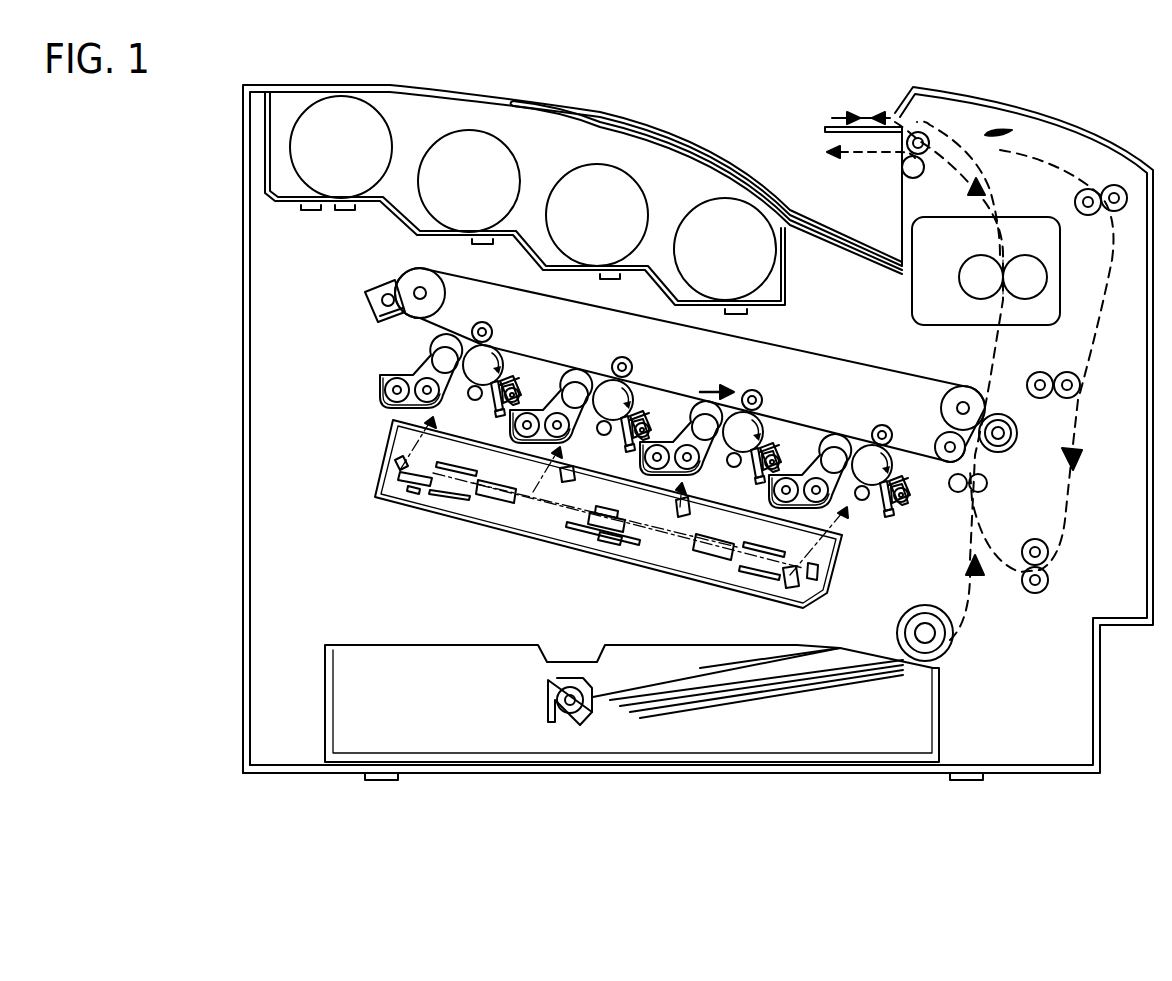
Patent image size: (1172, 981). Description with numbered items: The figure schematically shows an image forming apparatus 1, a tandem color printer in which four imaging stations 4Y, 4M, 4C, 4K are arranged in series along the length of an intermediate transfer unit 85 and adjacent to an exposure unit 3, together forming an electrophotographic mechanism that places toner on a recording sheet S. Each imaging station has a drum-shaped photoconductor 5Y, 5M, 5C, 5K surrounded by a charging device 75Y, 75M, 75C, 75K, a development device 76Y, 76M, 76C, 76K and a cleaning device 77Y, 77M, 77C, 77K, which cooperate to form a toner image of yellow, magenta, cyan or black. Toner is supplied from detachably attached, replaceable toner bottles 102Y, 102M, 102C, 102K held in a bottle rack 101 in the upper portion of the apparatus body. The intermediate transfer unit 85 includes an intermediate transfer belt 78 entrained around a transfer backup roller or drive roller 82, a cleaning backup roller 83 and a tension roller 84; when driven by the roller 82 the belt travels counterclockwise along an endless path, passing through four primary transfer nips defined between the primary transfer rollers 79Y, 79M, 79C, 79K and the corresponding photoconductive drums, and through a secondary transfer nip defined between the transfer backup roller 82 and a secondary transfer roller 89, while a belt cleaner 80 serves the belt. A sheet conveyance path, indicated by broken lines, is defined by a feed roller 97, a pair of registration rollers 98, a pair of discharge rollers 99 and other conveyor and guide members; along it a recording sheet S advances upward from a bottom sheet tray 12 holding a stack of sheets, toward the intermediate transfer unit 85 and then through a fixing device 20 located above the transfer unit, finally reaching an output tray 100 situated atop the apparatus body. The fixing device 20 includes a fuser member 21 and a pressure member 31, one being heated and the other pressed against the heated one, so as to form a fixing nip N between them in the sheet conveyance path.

The image forming apparatus 1 is at (655, 92).
The output tray 100 is at (726, 160).
The bottle rack 101 is at (400, 230).
The toner bottle 102Y is at (310, 108).
The toner bottle 102M is at (438, 146).
The toner bottle 102C is at (570, 180).
The toner bottle 102K is at (694, 220).
The discharge rollers 99 is at (905, 165).
The fixing device 20 is at (1012, 218).
The fuser member 21 is at (962, 270).
The pressure member 31 is at (1048, 272).
The fixing nip N is at (1006, 264).
The registration rollers 98 is at (978, 492).
The intermediate transfer unit 85 is at (650, 365).
The intermediate transfer belt 78 is at (790, 340).
The cleaning backup roller 83 is at (442, 296).
The tension roller 84 is at (945, 412).
The transfer backup roller 82 is at (962, 388).
The belt cleaner 80 is at (368, 312).
The secondary transfer roller 89 is at (1000, 453).
The photoconductive drum 5Y is at (500, 360).
The photoconductive drum 5M is at (630, 388).
The photoconductive drum 5C is at (762, 424).
The photoconductive drum 5K is at (892, 452).
The primary transfer roller 79Y is at (490, 328).
The primary transfer roller 79M is at (628, 356).
The primary transfer roller 79C is at (760, 390).
The primary transfer roller 79K is at (880, 424).
The charging device 75Y is at (474, 400).
The charging device 75M is at (606, 436).
The charging device 75C is at (736, 468).
The charging device 75K is at (866, 502).
The development device 76Y is at (380, 386).
The development device 76M is at (512, 432).
The development device 76C is at (642, 472).
The development device 76K is at (778, 505).
The cleaning device 77Y is at (525, 380).
The cleaning device 77M is at (662, 408).
The cleaning device 77C is at (790, 440).
The cleaning device 77K is at (900, 497).
The exposure unit 3 is at (475, 520).
The imaging station 4Y is at (392, 440).
The imaging station 4M is at (545, 510).
The imaging station 4C is at (668, 540).
The imaging station 4K is at (852, 520).
The sheet tray 12 is at (745, 652).
The sheet S is at (680, 700).
The feed roller 97 is at (925, 605).